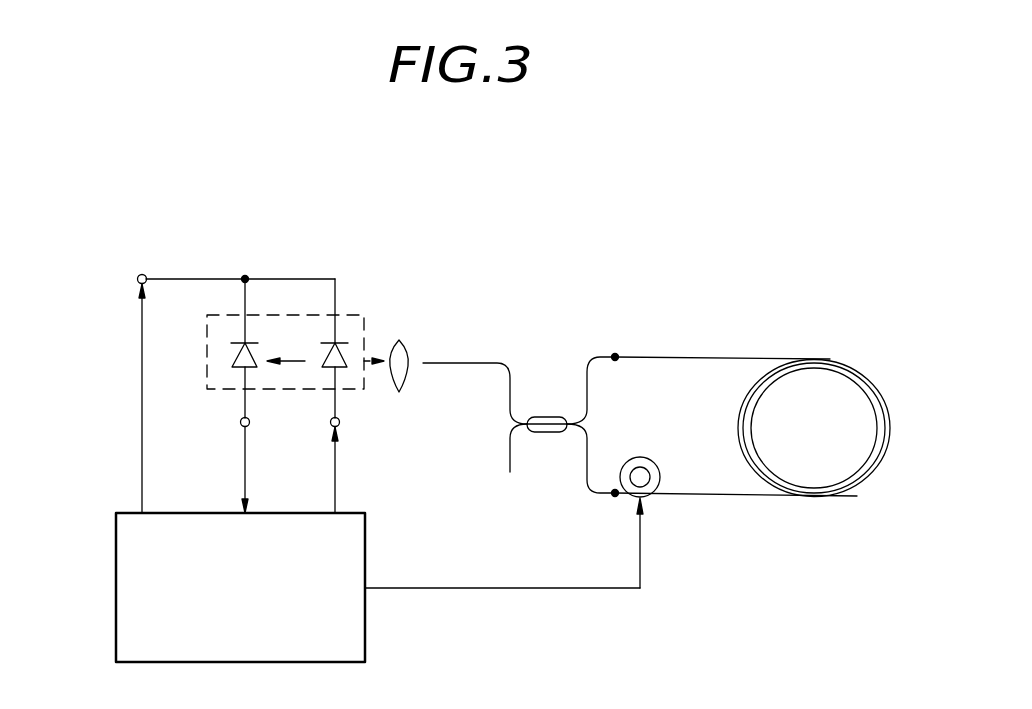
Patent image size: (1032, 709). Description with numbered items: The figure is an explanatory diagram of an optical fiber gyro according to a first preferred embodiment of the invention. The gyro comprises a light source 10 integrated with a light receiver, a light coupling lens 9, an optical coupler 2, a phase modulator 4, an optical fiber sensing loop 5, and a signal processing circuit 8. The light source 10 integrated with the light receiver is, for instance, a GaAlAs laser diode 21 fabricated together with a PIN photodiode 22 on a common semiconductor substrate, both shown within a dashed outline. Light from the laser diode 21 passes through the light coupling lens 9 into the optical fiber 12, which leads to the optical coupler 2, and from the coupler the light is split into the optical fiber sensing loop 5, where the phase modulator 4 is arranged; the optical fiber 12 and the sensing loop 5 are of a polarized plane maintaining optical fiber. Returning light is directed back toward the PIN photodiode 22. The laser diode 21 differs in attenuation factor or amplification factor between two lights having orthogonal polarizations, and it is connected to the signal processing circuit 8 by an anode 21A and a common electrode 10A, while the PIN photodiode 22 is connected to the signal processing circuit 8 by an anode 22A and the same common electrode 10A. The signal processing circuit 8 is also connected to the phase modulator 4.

The optical coupler 2 is at (552, 417).
The phase modulator 4 is at (653, 483).
The optical fiber sensing loop 5 is at (832, 355).
The signal processing circuit 8 is at (365, 635).
The light coupling lens 9 is at (398, 338).
The light source integrated with light receiver 10 is at (296, 315).
The common electrode 10A is at (137, 279).
The optical fiber 12 is at (457, 370).
The GaAlAs laser diode 21 is at (330, 363).
The anode 21A is at (330, 425).
The PIN photodiode 22 is at (230, 362).
The anode 22A is at (240, 425).